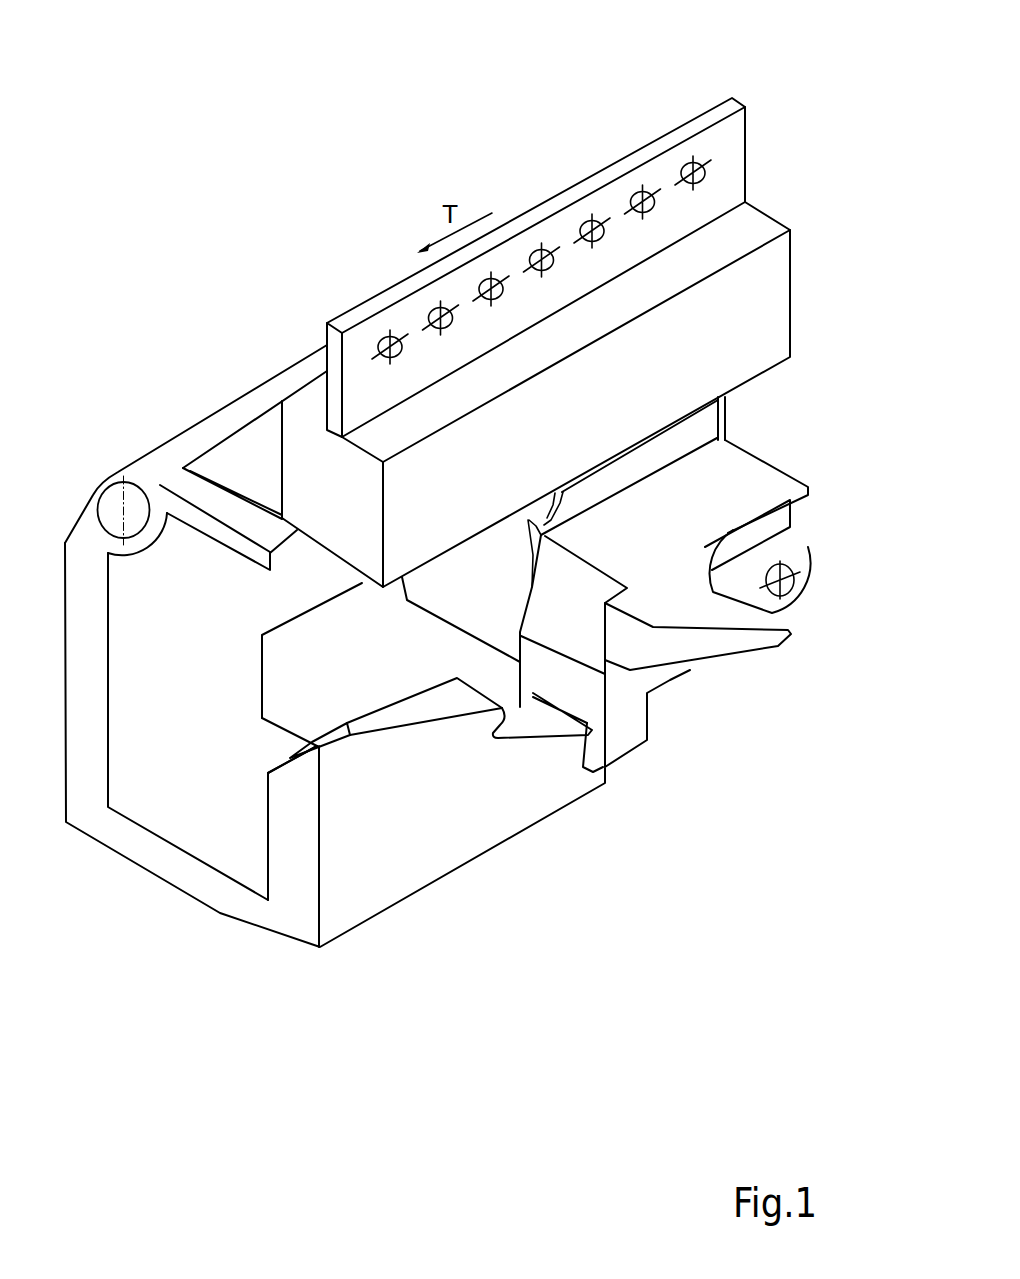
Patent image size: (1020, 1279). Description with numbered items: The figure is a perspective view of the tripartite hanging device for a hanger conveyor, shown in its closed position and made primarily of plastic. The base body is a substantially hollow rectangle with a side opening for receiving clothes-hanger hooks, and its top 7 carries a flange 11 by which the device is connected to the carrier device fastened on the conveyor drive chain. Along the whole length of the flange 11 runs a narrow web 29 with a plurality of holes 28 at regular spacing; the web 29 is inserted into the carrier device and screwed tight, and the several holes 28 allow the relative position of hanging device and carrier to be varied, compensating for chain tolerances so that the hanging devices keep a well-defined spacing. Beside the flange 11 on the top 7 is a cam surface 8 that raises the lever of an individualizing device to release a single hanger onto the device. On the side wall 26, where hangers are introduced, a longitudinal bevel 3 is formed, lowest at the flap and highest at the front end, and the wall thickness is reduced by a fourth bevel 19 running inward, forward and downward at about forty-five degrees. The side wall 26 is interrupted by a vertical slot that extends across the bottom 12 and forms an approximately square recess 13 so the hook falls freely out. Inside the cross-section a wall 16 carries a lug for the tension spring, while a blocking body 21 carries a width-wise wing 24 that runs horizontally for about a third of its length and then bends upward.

The bevel 3 is at (438, 718).
The top 7 is at (185, 452).
The cam surface 8 is at (253, 447).
The flange 11 is at (763, 203).
The bottom 12 is at (398, 907).
The recess 13 is at (382, 648).
The wall 16 is at (461, 597).
The fourth bevel 19 is at (297, 745).
The blocking body 21 is at (560, 578).
The wing 24 is at (687, 650).
The side wall 26 is at (293, 898).
The holes 28 is at (540, 248).
The web 29 is at (610, 203).